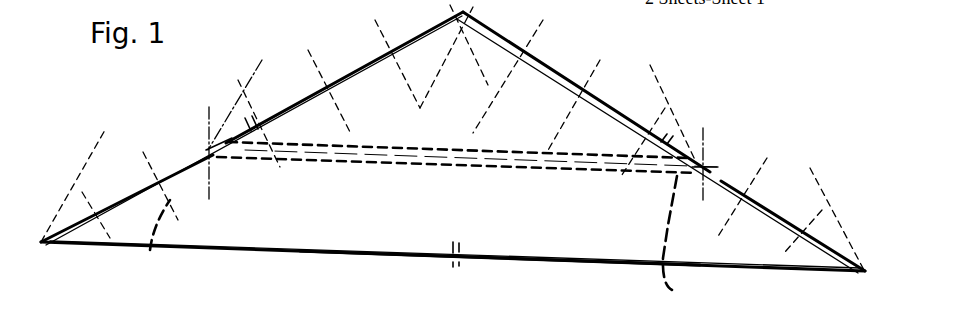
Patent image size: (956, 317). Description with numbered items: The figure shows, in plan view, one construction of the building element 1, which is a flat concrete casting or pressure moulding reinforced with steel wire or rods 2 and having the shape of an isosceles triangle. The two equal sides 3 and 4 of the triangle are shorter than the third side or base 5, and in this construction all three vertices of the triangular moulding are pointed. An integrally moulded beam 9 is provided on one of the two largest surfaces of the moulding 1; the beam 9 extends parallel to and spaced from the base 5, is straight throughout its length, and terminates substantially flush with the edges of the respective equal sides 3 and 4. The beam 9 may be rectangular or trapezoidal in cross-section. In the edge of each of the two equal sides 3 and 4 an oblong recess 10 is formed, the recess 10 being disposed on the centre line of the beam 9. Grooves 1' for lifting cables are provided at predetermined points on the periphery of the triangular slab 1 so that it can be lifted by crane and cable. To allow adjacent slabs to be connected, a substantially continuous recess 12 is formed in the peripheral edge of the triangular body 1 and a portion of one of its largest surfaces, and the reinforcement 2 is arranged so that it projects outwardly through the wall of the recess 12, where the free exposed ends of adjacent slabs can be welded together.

The building element 1 is at (500, 276).
The grooves for lifting cables 1' is at (463, 177).
The steel wire or rods 2 is at (145, 243).
The equal side 3 is at (316, 89).
The equal side 4 is at (613, 105).
The third side or base 5 is at (274, 251).
The beam 9 is at (678, 241).
The oblong recess 10 is at (202, 160).
The recess 12 is at (132, 192).